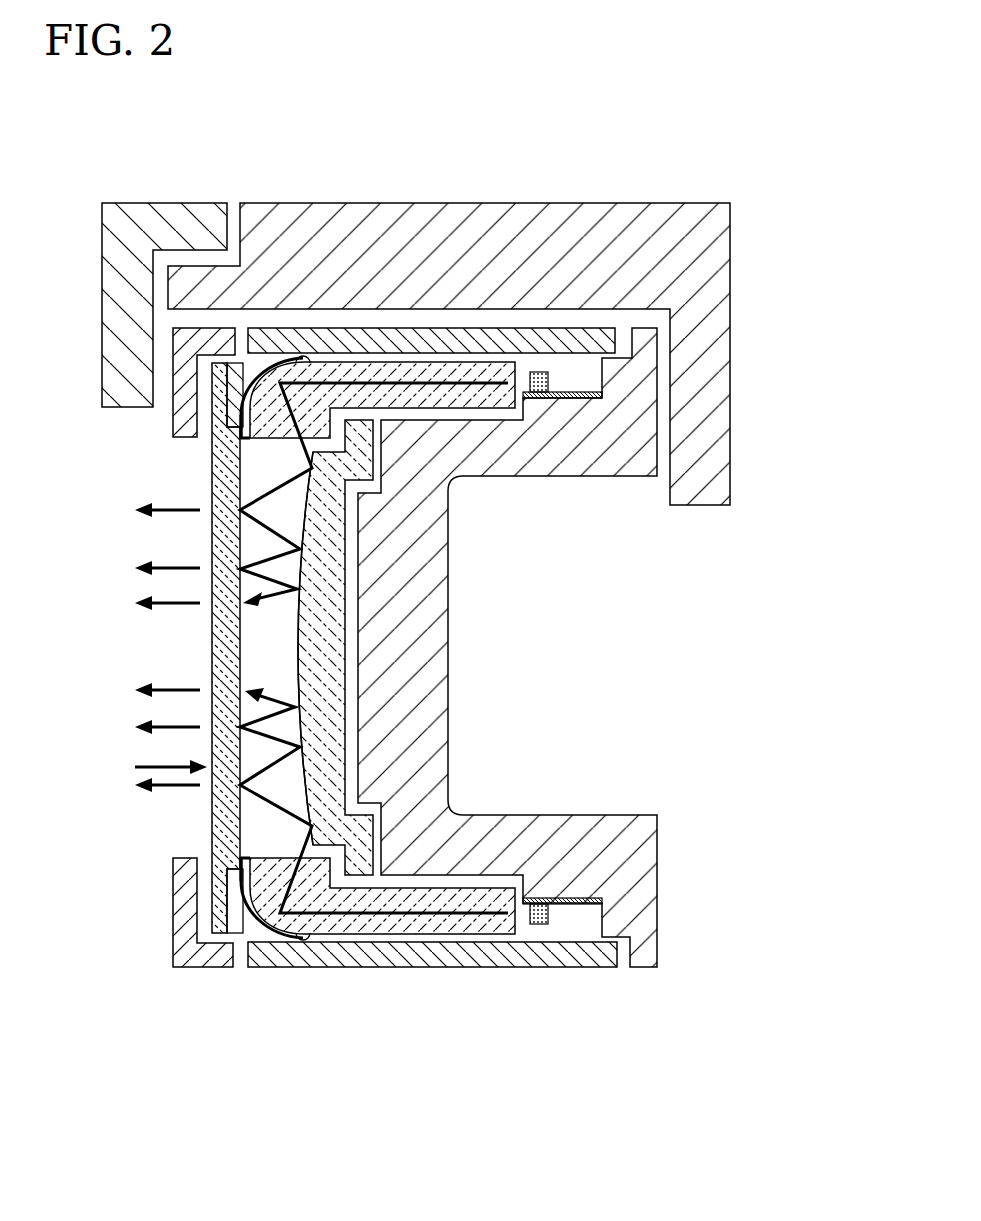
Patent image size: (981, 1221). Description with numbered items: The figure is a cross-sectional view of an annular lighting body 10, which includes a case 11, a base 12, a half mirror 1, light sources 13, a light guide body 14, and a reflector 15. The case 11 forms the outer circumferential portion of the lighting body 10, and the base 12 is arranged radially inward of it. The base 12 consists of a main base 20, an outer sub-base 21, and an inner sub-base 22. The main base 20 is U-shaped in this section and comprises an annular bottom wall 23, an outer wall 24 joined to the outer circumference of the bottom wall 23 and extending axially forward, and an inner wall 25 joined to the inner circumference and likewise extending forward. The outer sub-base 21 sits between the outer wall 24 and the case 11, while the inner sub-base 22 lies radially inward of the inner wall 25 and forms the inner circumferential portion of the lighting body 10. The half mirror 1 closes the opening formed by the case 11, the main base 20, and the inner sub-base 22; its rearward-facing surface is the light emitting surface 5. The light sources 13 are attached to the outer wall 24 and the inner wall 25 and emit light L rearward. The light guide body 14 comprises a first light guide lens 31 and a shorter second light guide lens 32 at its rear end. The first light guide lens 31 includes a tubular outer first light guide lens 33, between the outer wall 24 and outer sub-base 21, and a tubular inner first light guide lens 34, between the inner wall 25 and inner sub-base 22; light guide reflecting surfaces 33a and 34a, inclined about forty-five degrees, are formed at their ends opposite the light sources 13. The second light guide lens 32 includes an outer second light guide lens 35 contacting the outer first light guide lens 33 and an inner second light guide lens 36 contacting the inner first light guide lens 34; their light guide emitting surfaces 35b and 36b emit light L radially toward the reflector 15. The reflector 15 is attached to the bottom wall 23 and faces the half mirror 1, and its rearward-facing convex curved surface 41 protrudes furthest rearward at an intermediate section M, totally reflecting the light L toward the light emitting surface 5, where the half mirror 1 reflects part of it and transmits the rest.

The half mirror 1 is at (135, 765).
The light emitting surface 5 is at (208, 535).
The lighting body 10 is at (740, 100).
The case 11 is at (653, 203).
The base 12 is at (446, 966).
The light source 13 is at (548, 381).
The light guide body 14 is at (428, 340).
The reflector 15 is at (360, 722).
The main base 20 is at (578, 647).
The outer sub-base 21 is at (337, 345).
The inner sub-base 22 is at (413, 953).
The bottom wall 23 is at (418, 597).
The outer wall 24 is at (567, 443).
The inner wall 25 is at (567, 822).
The first light guide lens 31 is at (381, 577).
The second light guide lens 32 is at (181, 604).
The outer first light guide lens 33 is at (373, 368).
The light guide reflecting surface 33a is at (310, 367).
The inner first light guide lens 34 is at (363, 923).
The light guide reflecting surface 34a is at (305, 920).
The outer second light guide lens 35 is at (268, 415).
The light guide emitting surface 35b is at (278, 442).
The inner second light guide lens 36 is at (265, 870).
The light guide emitting surface 36b is at (278, 855).
The convex curved surface 41 is at (296, 670).
The light L is at (463, 383).
The intermediate section M is at (297, 640).